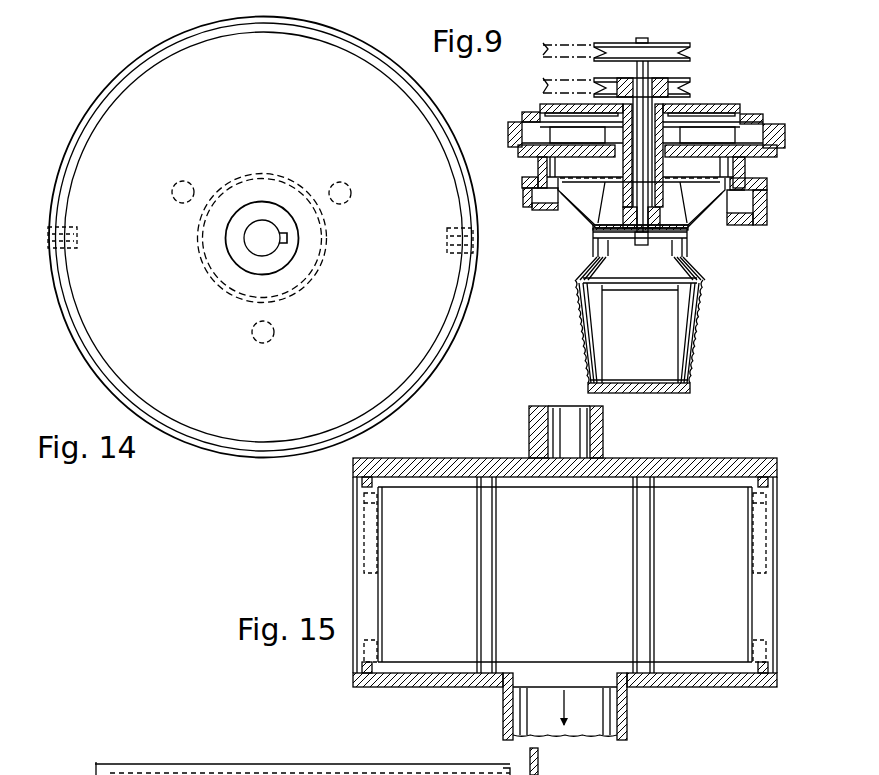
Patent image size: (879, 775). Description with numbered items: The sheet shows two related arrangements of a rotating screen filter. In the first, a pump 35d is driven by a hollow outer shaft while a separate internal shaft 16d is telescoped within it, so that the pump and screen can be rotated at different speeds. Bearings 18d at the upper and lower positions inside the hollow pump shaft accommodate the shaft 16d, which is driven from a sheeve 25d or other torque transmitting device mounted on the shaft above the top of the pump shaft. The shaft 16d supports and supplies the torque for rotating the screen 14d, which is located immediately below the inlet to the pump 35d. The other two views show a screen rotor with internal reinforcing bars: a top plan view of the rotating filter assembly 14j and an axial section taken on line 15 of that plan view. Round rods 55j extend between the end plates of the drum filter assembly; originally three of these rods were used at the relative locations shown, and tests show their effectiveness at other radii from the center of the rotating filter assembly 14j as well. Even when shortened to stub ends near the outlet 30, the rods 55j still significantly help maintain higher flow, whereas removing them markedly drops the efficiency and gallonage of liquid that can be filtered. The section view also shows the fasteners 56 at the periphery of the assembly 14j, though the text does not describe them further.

In FIG. 9, the screen 14d is at (698, 334).
In FIG. 14, the rotating filter assembly 14j is at (470, 314).
In FIG. 15, the rotating filter assembly 14j is at (350, 561).
In FIG. 14, the section line 15— 15 is at (44, 238).
In FIG. 9, the shaft 16d is at (650, 66).
In FIG. 9, the bearings 18d is at (630, 77).
In FIG. 9, the sheeve 25d is at (690, 44).
In FIG. 14, the outlet 30 is at (318, 266).
In FIG. 15, the outlet 30 is at (598, 688).
In FIG. 9, the pump 35d is at (563, 218).
In FIG. 14, the round rods 55j is at (183, 181).
In FIG. 15, the round rods 55j is at (645, 547).
In FIG. 14, the fastening bolts 56 is at (77, 240).
In FIG. 15, the fastening bolts 56 is at (376, 561).